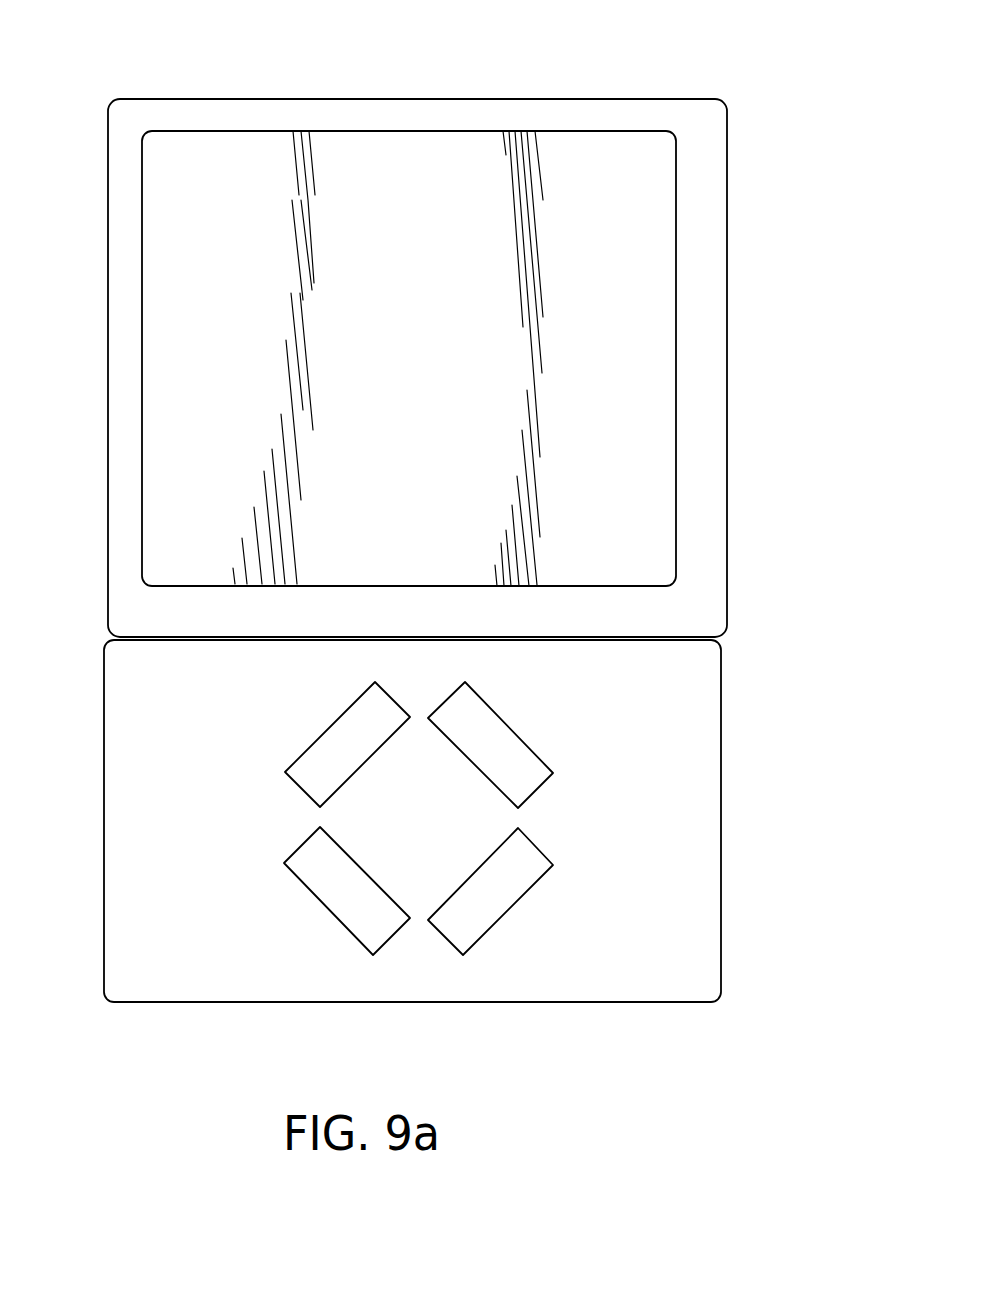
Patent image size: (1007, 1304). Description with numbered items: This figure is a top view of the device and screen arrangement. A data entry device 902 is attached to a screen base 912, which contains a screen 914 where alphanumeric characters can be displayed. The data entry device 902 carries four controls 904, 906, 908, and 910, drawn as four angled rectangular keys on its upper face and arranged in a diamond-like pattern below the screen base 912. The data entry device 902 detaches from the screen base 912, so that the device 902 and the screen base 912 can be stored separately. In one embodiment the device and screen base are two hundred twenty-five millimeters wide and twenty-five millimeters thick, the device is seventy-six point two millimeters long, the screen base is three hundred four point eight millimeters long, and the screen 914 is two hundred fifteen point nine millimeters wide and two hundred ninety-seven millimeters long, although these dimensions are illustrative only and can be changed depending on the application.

The data entry device 902 is at (721, 792).
The control 904 is at (337, 755).
The control 906 is at (503, 745).
The control 908 is at (503, 895).
The control 910 is at (343, 903).
The screen base 912 is at (727, 222).
The screen 914 is at (433, 275).